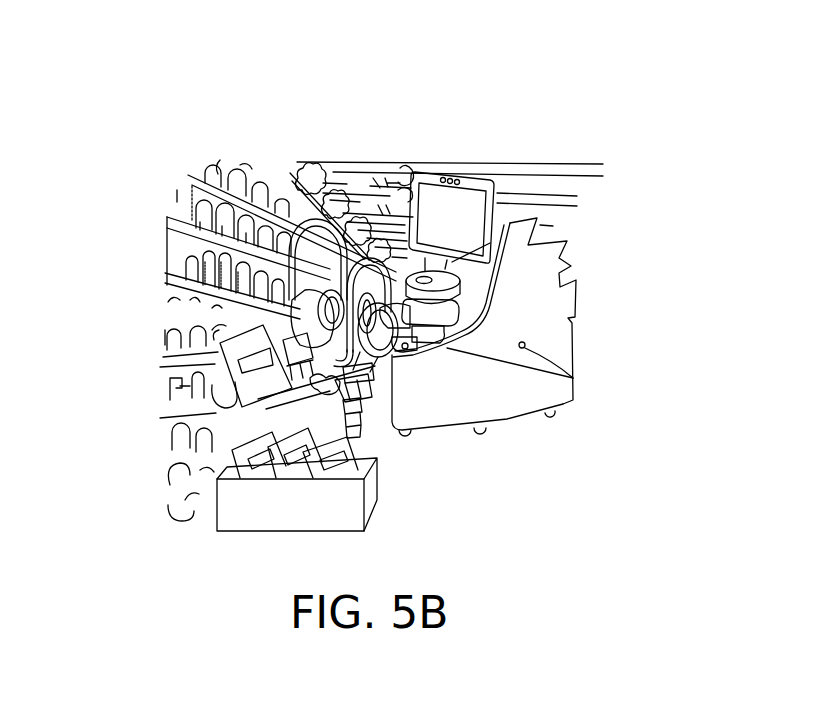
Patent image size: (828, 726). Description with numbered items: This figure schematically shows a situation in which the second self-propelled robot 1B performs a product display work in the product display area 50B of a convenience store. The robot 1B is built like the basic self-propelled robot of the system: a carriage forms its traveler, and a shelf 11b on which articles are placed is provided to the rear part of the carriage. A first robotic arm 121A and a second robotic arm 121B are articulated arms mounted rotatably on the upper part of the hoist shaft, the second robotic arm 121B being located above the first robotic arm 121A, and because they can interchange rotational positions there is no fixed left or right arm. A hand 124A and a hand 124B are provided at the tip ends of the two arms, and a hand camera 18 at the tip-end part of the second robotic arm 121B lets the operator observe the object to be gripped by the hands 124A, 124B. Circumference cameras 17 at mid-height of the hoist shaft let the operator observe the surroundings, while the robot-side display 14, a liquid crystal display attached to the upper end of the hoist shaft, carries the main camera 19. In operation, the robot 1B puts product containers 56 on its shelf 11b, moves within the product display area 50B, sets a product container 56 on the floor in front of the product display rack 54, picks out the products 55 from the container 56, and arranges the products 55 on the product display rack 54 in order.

The product display area 50B is at (356, 121).
The second self-propelled robot 1B is at (598, 288).
The shelf 11b is at (568, 268).
The robot-side display 14 is at (486, 178).
The circumference cameras 17 is at (573, 379).
The hand camera 18 is at (392, 393).
The main camera 19 is at (448, 175).
The product display rack 54 is at (152, 268).
The products 55 is at (353, 438).
The product container 56 is at (378, 490).
The first robotic arm 121A is at (308, 298).
The second robotic arm 121B is at (392, 357).
The hand 124A is at (262, 402).
The hand 124B is at (370, 423).